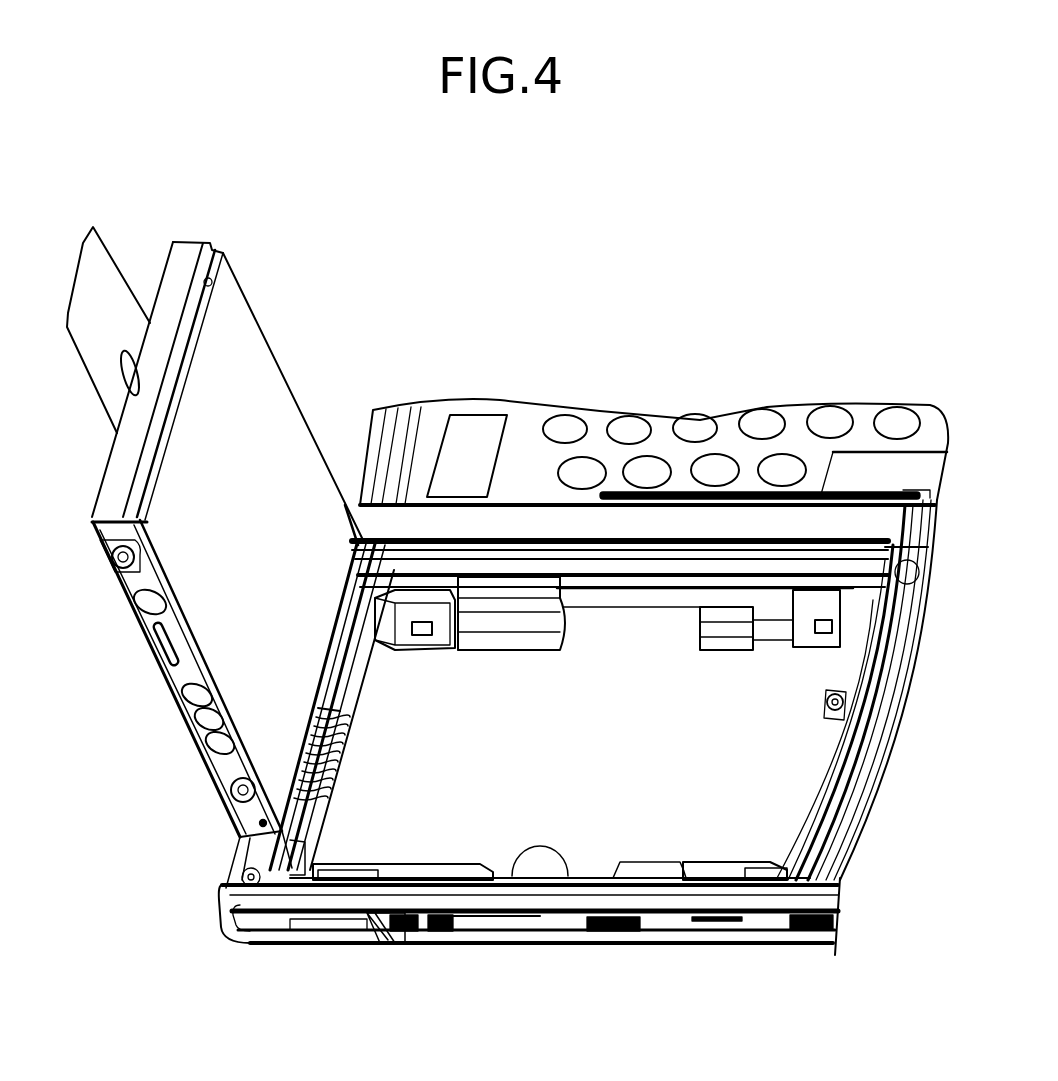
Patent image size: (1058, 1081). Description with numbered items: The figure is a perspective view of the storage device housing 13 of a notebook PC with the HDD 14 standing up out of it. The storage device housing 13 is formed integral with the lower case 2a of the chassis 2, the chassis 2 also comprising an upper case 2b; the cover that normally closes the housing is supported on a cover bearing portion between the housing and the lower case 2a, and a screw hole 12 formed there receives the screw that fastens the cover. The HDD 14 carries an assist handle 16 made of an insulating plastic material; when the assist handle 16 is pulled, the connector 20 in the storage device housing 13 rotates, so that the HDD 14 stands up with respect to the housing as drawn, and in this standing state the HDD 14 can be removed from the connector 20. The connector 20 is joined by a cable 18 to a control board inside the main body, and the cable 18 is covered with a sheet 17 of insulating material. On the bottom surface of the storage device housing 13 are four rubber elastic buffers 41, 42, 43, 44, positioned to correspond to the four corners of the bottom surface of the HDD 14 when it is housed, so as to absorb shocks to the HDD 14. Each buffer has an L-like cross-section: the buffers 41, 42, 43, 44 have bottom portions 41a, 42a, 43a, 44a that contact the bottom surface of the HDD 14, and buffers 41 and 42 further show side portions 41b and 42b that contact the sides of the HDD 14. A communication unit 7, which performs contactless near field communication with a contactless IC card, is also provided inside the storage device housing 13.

The chassis 2 is at (529, 957).
The lower case 2a is at (353, 915).
The upper case 2b is at (377, 930).
The communication unit 7 is at (658, 778).
The screw hole 12 is at (835, 700).
The storage device housing 13 is at (504, 880).
The HDD 14 is at (232, 648).
The assist handle 16 is at (100, 263).
The sheet 17 is at (617, 830).
The cable 18 is at (335, 765).
The connector 20 is at (335, 709).
The elastic buffer 41 is at (614, 642).
The bottom portion 41a is at (400, 633).
The side portion 41b is at (445, 600).
The elastic buffer 42 is at (740, 650).
The bottom portion 42a is at (800, 625).
The side portion 42b is at (800, 600).
The elastic buffer 43 is at (735, 839).
The bottom portion 43a is at (757, 862).
The elastic buffer 44 is at (403, 841).
The bottom portion 44a is at (330, 862).